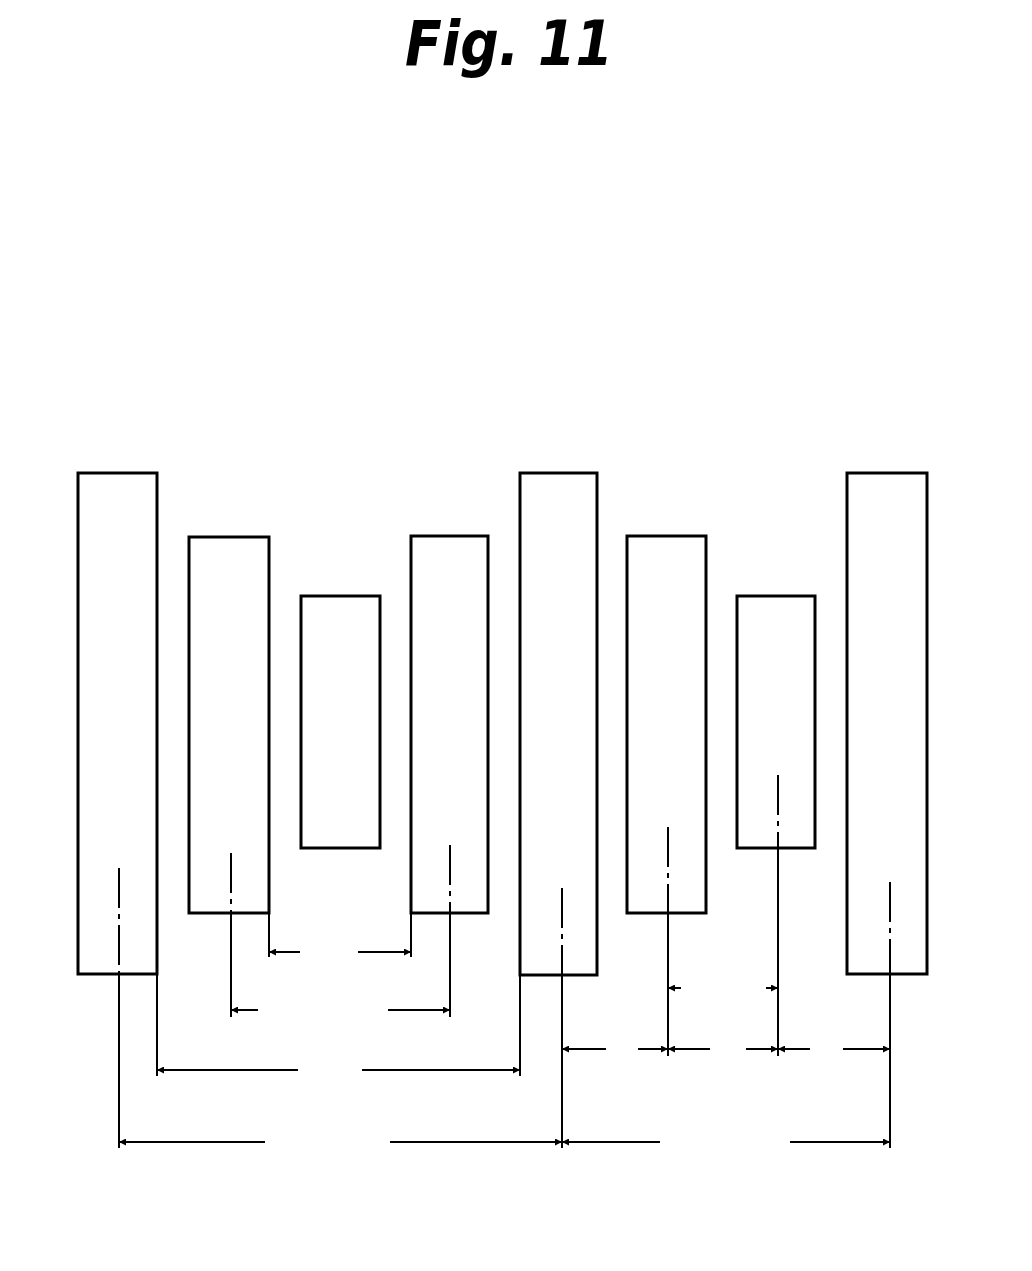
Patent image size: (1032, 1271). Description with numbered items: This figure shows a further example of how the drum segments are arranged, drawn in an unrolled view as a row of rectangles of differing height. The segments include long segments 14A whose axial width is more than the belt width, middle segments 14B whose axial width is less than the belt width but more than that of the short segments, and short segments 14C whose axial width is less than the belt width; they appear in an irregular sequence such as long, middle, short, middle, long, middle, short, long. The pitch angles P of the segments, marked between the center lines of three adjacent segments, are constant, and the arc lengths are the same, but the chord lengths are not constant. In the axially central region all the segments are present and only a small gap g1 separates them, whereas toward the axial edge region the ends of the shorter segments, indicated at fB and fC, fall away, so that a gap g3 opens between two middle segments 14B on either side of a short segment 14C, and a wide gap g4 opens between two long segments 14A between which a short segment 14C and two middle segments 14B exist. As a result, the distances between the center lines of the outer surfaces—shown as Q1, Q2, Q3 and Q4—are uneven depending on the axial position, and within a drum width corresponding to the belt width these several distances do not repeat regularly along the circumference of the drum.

The long segment 14A is at (118, 473).
The middle segment 14B is at (223, 537).
The short segment 14C is at (337, 596).
The small gap g1 is at (387, 588).
The gap g3 is at (340, 945).
The wide gap g4 is at (338, 1066).
The face of electrode 14B fB is at (469, 913).
The face of electrode 14C fC is at (320, 848).
The distance Q1 is at (723, 989).
The distance Q2 is at (340, 1010).
The distance Q3 is at (726, 1143).
The distance Q4 is at (340, 1143).
The pitch angle P is at (726, 1050).